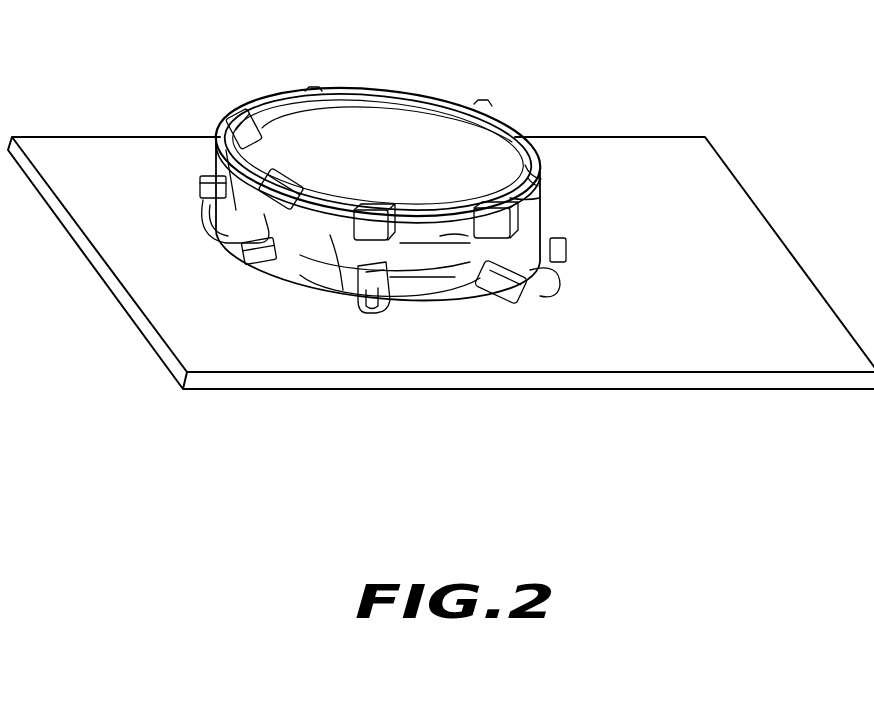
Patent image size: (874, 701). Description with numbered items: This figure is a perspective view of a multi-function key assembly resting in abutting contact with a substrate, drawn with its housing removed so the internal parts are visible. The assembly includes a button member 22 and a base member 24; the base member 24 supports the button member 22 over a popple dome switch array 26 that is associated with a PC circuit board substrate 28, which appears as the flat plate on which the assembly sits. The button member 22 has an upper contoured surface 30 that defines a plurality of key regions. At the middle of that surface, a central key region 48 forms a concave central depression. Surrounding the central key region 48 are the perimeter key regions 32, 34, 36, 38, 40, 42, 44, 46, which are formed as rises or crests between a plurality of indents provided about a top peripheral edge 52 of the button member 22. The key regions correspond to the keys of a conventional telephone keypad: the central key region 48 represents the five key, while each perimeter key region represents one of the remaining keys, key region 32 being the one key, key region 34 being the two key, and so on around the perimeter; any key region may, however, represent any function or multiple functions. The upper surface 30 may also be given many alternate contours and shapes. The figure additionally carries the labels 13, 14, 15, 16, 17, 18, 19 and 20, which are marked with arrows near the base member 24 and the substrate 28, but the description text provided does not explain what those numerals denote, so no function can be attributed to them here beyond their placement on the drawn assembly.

The button member 22 is at (391, 179).
The base member 24 is at (377, 307).
The popple dome switch array 26 is at (537, 290).
The PC circuit board substrate 28 is at (237, 358).
The upper contoured surface 30 is at (390, 122).
The key region 32 is at (266, 98).
The key region 34 is at (343, 96).
The key region 36 is at (470, 113).
The key region 38 is at (267, 153).
The key region 40 is at (523, 170).
The key region 42 is at (343, 200).
The key region 44 is at (433, 213).
The key region 46 is at (527, 203).
The central key region 48 is at (350, 137).
The top peripheral edge 52 is at (467, 220).
The clip 13 is at (389, 178).
The pad 14 is at (391, 200).
The retainer 15 is at (392, 175).
The clip 16 is at (235, 221).
The clip 17 is at (257, 183).
The retainer 18 is at (258, 250).
The pad 19 is at (359, 208).
The pad 20 is at (233, 160).